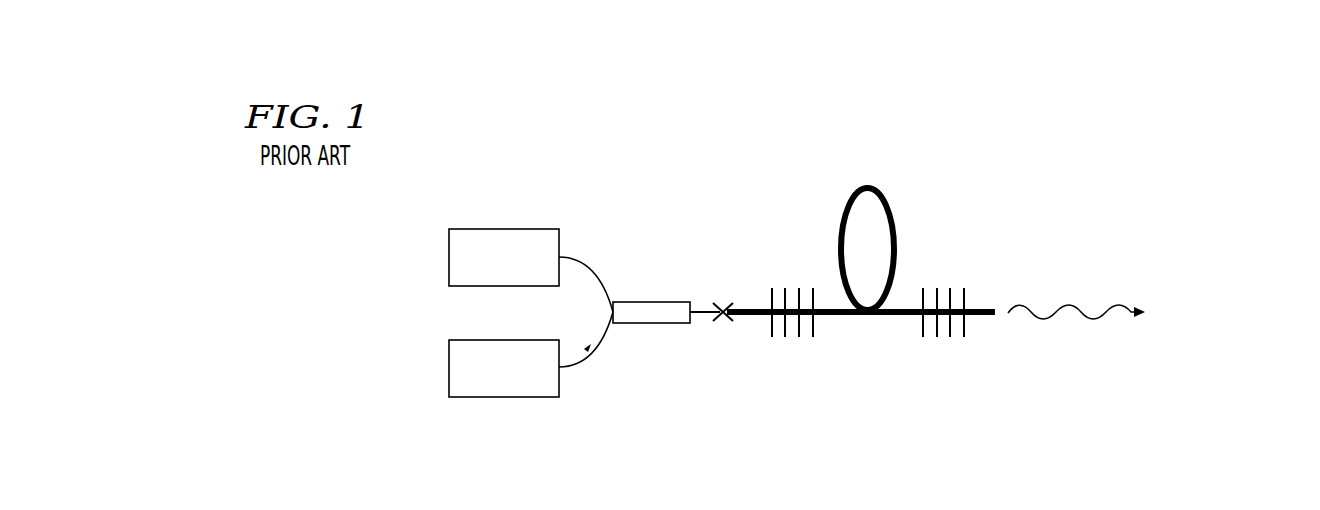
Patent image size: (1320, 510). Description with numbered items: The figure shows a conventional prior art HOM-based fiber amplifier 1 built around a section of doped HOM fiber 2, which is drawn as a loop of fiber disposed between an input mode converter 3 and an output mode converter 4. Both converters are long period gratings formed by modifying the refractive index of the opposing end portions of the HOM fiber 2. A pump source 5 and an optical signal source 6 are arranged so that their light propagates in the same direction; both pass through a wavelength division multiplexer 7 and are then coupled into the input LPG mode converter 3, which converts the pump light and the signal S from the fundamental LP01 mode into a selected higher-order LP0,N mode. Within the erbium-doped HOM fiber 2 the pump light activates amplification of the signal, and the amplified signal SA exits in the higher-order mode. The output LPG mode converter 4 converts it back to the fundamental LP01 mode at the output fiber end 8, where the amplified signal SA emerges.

The HOM-based fiber amplifier 1 is at (354, 231).
The doped HOM fiber 2 is at (896, 216).
The input mode converter 3 is at (793, 342).
The output mode converter 4 is at (944, 342).
The pump source 5 is at (449, 257).
The optical signal source 6 is at (449, 368).
The wavelength division multiplexer 7 is at (641, 302).
The output fiber end 8 is at (988, 309).